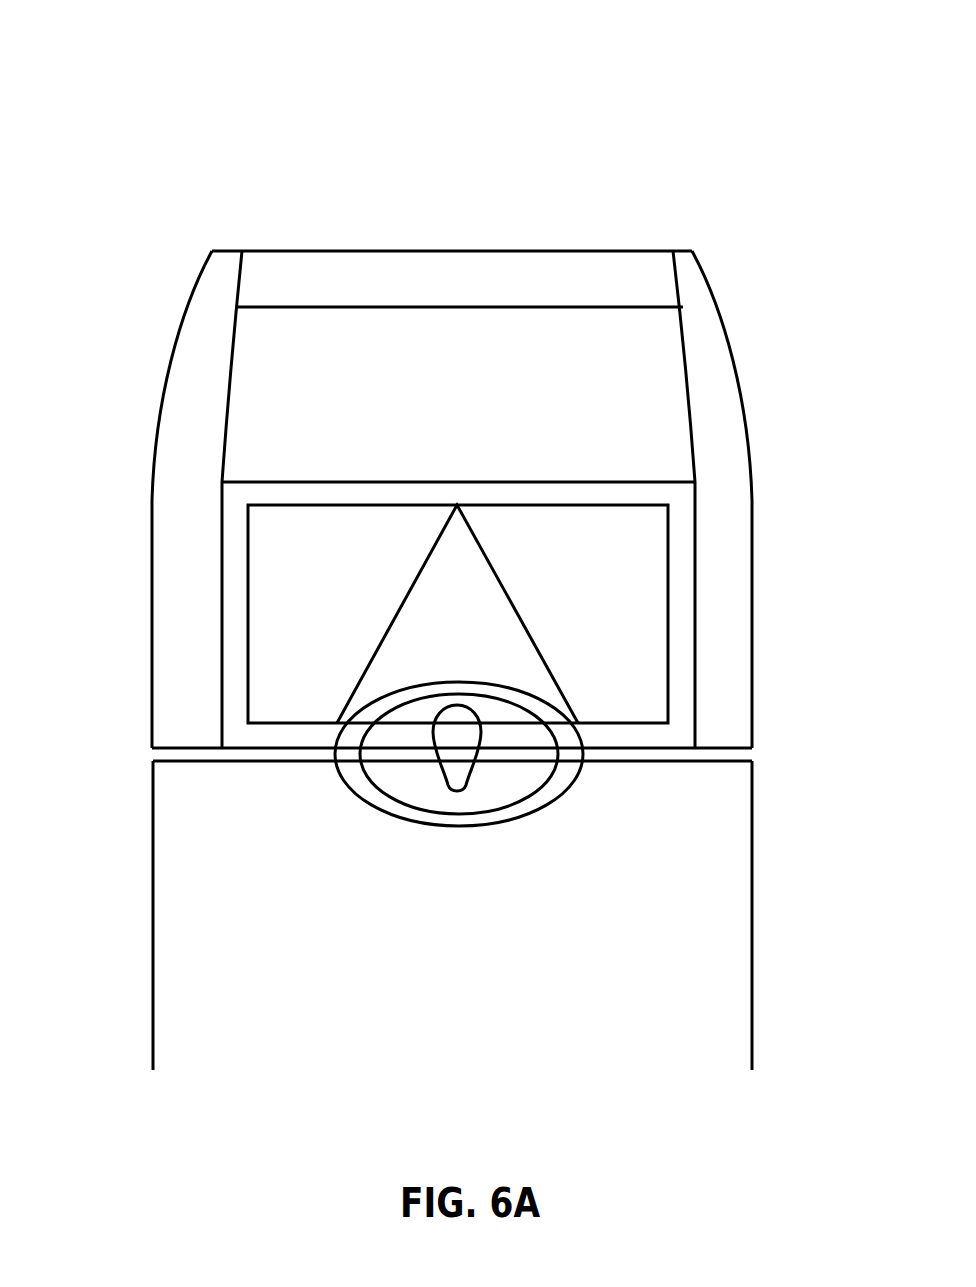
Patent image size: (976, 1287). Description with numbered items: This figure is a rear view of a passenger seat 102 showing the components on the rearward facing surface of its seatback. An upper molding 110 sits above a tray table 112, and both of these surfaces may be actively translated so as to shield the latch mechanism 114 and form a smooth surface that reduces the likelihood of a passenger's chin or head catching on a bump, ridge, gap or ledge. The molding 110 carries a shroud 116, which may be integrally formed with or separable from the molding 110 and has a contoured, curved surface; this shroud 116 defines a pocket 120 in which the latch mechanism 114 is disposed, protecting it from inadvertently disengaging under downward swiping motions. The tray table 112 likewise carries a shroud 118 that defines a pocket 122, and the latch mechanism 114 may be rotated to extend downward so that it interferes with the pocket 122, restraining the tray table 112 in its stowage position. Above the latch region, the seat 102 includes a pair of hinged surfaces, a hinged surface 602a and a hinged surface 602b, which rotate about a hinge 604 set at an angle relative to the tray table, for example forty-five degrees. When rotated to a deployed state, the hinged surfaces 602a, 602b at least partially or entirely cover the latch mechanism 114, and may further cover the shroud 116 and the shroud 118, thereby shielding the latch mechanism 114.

The passenger seat 102 is at (80, 46).
The molding 110 is at (150, 622).
The tray table 112 is at (150, 845).
The latch mechanism 114 is at (450, 782).
The shroud 116 is at (563, 734).
The shroud 118 is at (540, 817).
The pocket 120 is at (390, 730).
The pocket 122 is at (395, 777).
The hinged surface 602a is at (315, 502).
The hinged surface 602b is at (535, 502).
The hinge 604 is at (385, 638).